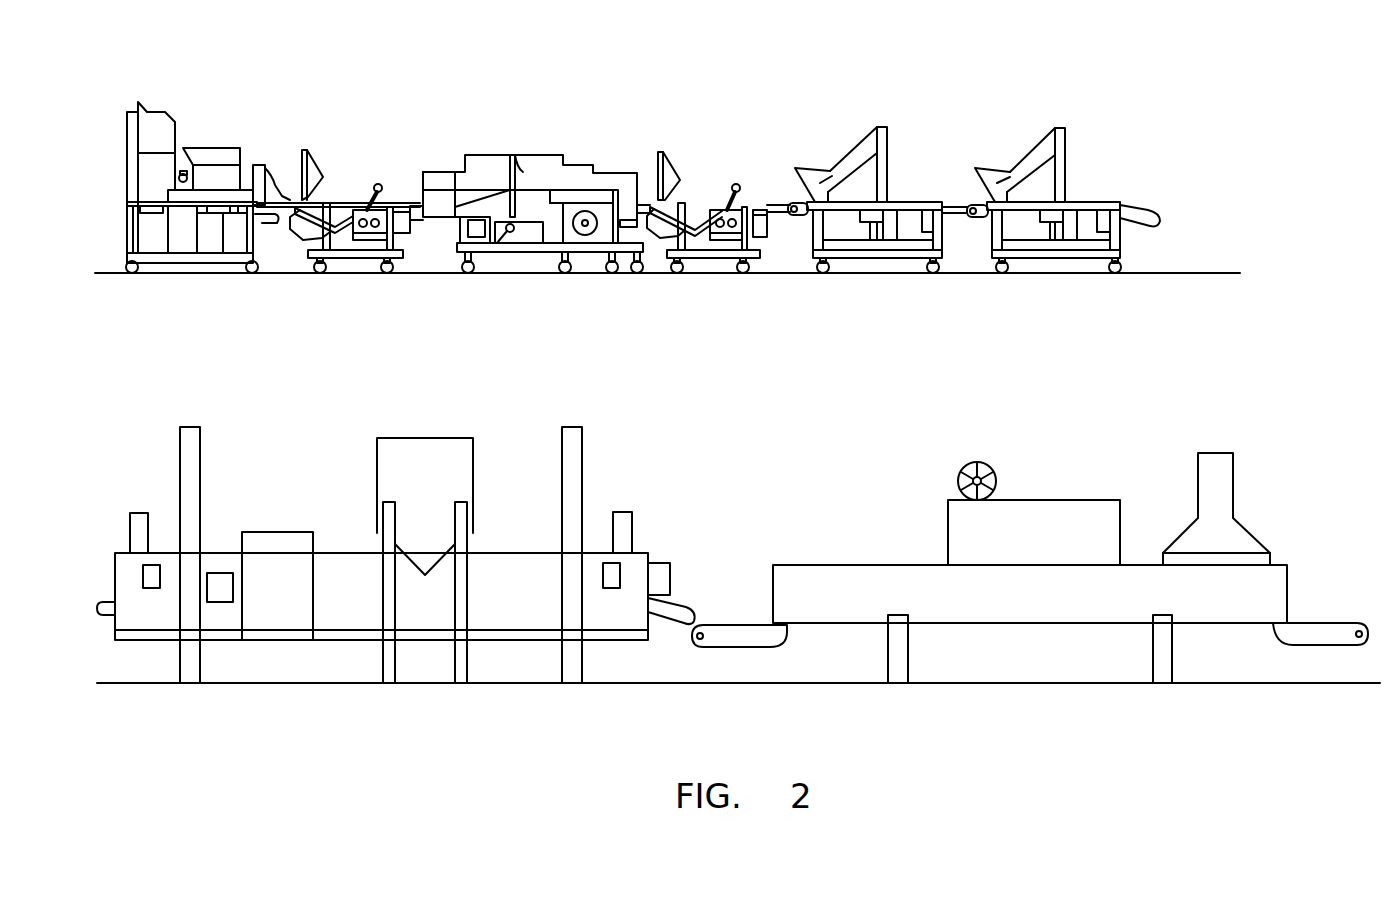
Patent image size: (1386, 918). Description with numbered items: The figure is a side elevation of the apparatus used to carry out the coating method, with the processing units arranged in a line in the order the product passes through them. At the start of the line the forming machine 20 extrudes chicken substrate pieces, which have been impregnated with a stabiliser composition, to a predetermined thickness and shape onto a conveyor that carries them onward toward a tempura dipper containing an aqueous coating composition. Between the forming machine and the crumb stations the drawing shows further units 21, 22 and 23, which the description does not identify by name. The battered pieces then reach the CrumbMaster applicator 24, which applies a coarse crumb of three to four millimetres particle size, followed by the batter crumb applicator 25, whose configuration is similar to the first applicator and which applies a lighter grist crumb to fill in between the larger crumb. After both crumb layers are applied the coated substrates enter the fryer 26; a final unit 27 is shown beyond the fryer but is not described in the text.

The forming machine 20 is at (215, 150).
The first rolling machine 21 is at (338, 200).
The pressing machine 22 is at (540, 150).
The second rolling machine 23 is at (702, 200).
The CrumbMaster applicator 24 is at (848, 150).
The batter crumb applicator 25 is at (1027, 153).
The fryer 26 is at (348, 552).
The drying machine 27 is at (1070, 500).